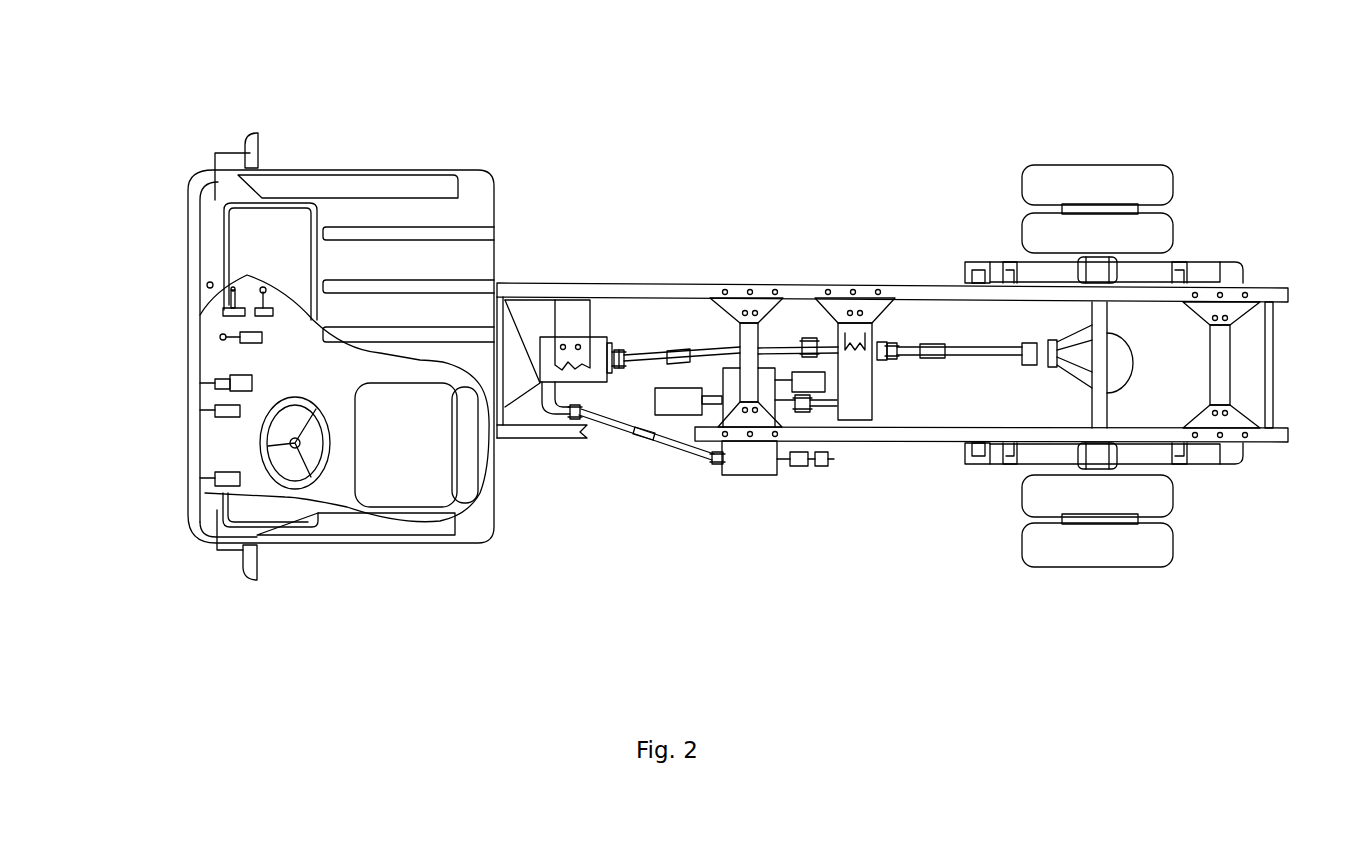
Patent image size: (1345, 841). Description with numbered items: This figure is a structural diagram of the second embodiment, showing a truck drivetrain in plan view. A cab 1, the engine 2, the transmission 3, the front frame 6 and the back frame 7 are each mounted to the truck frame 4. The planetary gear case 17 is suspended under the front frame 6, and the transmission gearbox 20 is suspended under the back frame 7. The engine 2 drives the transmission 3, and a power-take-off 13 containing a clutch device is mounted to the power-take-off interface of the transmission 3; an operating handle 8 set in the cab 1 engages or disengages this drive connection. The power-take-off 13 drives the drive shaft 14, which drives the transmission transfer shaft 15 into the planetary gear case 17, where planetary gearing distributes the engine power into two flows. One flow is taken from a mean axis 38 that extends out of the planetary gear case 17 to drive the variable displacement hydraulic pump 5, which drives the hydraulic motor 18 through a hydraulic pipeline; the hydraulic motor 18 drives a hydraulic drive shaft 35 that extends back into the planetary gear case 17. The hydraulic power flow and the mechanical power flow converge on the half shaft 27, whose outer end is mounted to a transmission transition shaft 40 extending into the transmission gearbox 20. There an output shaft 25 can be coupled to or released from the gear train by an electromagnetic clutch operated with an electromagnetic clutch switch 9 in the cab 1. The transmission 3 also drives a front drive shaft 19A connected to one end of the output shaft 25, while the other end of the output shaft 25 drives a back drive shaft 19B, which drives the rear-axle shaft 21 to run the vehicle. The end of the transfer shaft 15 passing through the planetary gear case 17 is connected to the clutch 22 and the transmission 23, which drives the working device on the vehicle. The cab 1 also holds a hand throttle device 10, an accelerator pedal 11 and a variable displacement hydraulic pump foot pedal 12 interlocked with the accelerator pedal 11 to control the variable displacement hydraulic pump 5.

The cab 1 is at (278, 297).
The engine 2 is at (525, 348).
The transmission 3 is at (600, 350).
The truck frame 4 is at (613, 287).
The variable displacement hydraulic pump 5 is at (651, 437).
The front frame 6 is at (762, 322).
The back frame 7 is at (862, 302).
The operating handle 8 is at (236, 290).
The electromagnetic clutch switch 9 is at (226, 300).
The hand throttle device 10 is at (221, 339).
The accelerator pedal 11 is at (214, 379).
The variable displacement hydraulic pump foot pedal 12 is at (236, 373).
The power-take-off 13 is at (550, 400).
The drive shaft 14 is at (640, 358).
The transmission transfer shaft 15 is at (797, 467).
The planetary gear case 17 is at (752, 470).
The hydraulic motor 18 is at (846, 296).
The front drive shaft 19A is at (632, 370).
The back drive shaft 19B is at (900, 352).
The transmission gearbox 20 is at (868, 332).
The rear-axle shaft 21 is at (1100, 403).
The clutch 22 is at (820, 467).
The transmission 23 is at (810, 407).
The output shaft 25 is at (817, 377).
The half shaft 27 is at (750, 310).
The hydraulic drive shaft 35 is at (772, 382).
The mean axis 38 is at (680, 408).
The transmission transition shaft 40 is at (823, 403).